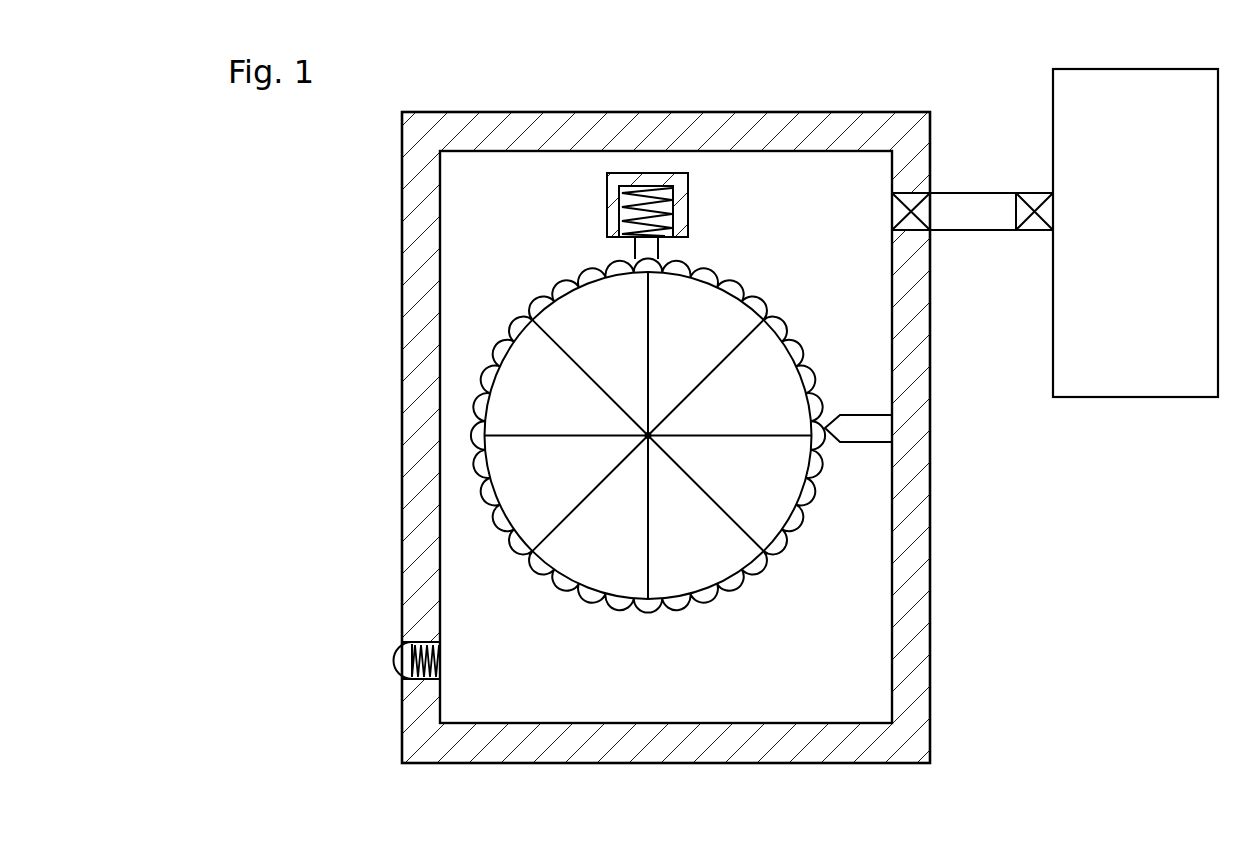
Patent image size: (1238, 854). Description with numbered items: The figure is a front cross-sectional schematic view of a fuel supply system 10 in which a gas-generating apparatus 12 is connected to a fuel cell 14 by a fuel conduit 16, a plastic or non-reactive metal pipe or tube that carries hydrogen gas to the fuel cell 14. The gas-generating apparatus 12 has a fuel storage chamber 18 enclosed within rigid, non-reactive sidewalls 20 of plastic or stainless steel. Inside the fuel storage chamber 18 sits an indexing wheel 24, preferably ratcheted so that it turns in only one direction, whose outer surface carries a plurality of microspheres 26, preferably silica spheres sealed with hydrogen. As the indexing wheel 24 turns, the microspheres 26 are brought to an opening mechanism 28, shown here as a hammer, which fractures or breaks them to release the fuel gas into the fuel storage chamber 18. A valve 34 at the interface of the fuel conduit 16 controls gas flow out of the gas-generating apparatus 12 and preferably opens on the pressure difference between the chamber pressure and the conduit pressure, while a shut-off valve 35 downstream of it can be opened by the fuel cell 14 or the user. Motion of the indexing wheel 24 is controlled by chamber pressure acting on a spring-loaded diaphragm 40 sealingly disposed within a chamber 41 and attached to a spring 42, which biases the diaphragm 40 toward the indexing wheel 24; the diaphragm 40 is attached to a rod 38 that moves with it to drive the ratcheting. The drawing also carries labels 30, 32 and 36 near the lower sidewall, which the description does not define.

The fuel supply system 10 is at (1058, 477).
The gas-generating apparatus 12 is at (963, 614).
The fuel cell 14 is at (1135, 233).
The fuel conduit 16 is at (975, 210).
The fuel storage chamber 18 is at (838, 185).
The sidewalls 20 is at (910, 678).
The indexing wheel 24 is at (540, 536).
The microspheres 26 is at (587, 593).
The opening mechanism 28 is at (866, 428).
The gas inlet flow 30 is at (323, 659).
The inlet check valve 32 is at (370, 665).
The valve 34 is at (915, 205).
The shut-off valve 35 is at (1036, 205).
The valve ball 36 is at (405, 663).
The rod 38 is at (645, 250).
The spring-loaded diaphragm 40 is at (625, 237).
The chamber 41 is at (503, 171).
The spring 42 is at (619, 190).